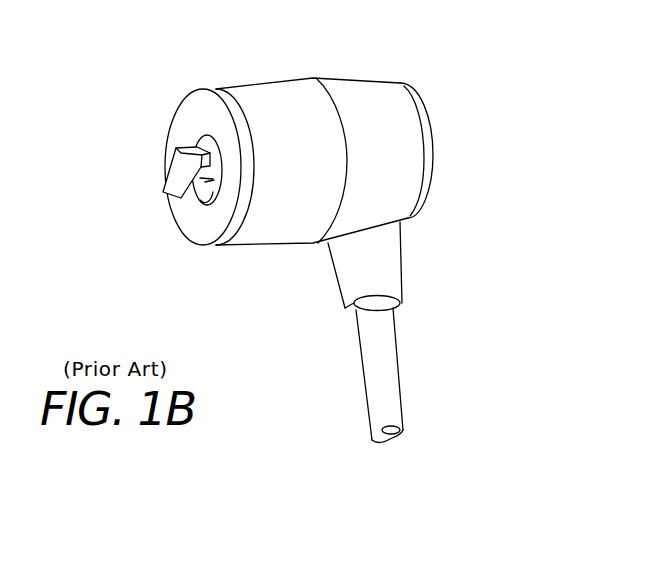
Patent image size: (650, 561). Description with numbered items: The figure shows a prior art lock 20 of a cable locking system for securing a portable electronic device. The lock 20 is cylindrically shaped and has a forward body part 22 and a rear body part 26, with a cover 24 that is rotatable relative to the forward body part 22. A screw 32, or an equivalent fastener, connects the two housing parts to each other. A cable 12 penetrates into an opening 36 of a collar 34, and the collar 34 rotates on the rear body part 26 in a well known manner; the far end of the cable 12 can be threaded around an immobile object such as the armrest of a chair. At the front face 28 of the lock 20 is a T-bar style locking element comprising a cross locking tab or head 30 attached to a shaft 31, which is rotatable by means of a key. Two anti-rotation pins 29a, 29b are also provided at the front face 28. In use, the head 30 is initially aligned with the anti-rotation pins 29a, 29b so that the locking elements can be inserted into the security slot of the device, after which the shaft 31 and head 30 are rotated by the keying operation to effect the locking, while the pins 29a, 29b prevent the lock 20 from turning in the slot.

The lock 20 is at (343, 57).
The forward body part 22 is at (272, 78).
The cover 24 is at (400, 127).
The rear body part 26 is at (433, 175).
The front face 28 is at (195, 103).
The anti-rotation pin 29a is at (198, 138).
The anti-rotation pin 29b is at (195, 192).
The locking tab or head 30 is at (170, 182).
The shaft 31 is at (212, 182).
The screw 32 is at (298, 245).
The collar 34 is at (393, 268).
The opening 36 is at (398, 311).
The cable 12 is at (358, 400).